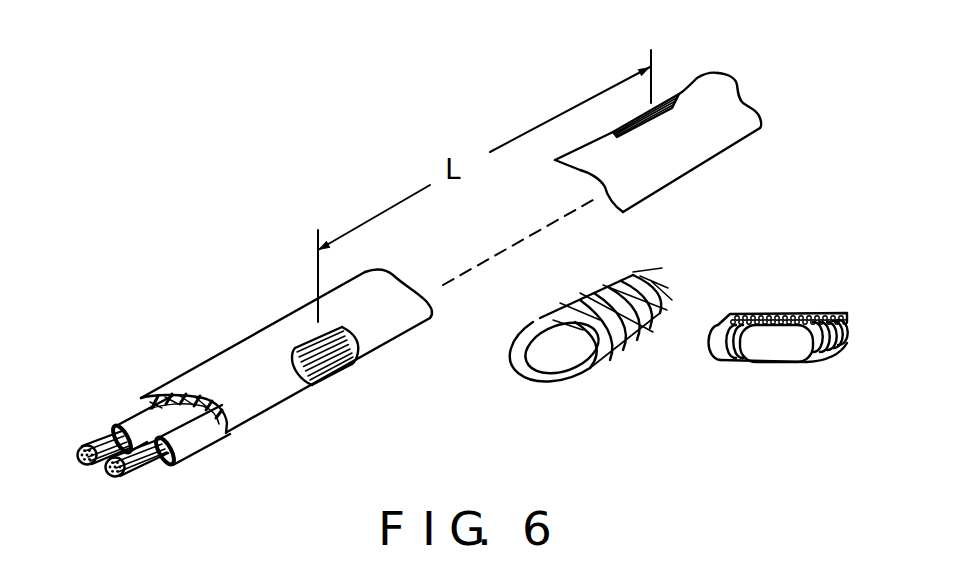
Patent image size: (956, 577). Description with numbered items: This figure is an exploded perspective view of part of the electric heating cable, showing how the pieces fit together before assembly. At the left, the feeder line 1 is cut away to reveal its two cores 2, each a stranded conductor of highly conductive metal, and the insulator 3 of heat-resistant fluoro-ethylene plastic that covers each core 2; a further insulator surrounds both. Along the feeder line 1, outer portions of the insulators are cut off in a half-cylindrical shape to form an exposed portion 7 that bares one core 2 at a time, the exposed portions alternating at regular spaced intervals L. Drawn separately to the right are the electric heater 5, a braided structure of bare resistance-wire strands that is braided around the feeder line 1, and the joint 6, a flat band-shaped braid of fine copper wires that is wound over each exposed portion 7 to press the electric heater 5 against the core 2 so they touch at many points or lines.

The feeder line 1 is at (358, 182).
The cores 2 is at (99, 442).
The insulator 3 is at (138, 417).
The electric heater 5 is at (592, 374).
The joint 6 is at (790, 301).
The exposed portion 7 is at (307, 342).